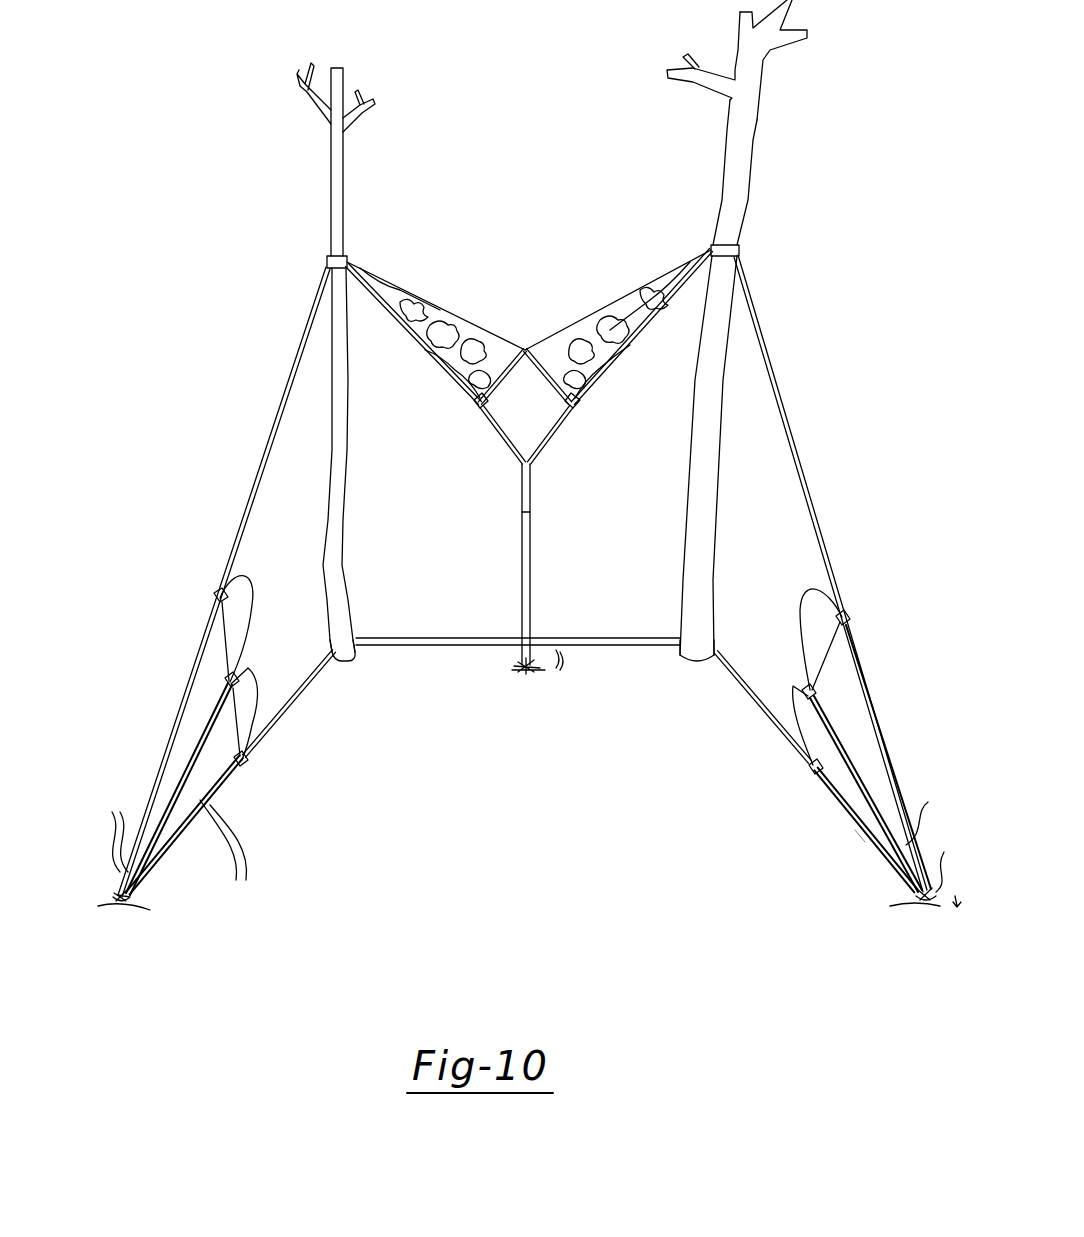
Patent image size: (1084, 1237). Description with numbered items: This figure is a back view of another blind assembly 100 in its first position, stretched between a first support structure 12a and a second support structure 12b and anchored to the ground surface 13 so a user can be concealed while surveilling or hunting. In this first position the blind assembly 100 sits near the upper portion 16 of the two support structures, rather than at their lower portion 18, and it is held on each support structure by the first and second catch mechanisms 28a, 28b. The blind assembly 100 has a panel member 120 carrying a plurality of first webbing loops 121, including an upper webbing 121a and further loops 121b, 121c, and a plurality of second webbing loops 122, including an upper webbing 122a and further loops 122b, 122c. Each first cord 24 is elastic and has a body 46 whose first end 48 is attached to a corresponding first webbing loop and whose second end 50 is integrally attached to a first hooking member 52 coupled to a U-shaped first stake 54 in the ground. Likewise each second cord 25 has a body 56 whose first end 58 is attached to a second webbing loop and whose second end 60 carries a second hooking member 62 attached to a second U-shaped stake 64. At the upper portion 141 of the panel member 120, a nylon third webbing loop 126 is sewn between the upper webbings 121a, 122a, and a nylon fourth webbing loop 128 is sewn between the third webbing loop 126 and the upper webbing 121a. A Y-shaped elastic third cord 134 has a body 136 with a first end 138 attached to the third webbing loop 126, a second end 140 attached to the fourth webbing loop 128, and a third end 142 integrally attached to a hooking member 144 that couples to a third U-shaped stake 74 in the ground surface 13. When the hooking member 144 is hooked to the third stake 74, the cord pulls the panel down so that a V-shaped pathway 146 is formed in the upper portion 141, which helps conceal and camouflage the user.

The first support structure 12a is at (716, 47).
The second support structure 12b is at (538, 353).
The ground surface 13 is at (693, 999).
The upper portion 16 is at (335, 160).
The lower portion 18 is at (345, 667).
The first cord 24 is at (849, 731).
The second cord 25 is at (208, 708).
The first catch mechanism 28a is at (740, 250).
The second catch mechanism 28b is at (328, 261).
The body 46 is at (870, 842).
The first end 48 is at (814, 692).
The second end 50 is at (930, 814).
The first hooking member 52 is at (946, 859).
The first stake 54 is at (908, 904).
The body 56 is at (227, 846).
The first end 58 is at (228, 680).
The second end 60 is at (106, 834).
The second hooking member 62 is at (116, 893).
The second stake 64 is at (134, 906).
The third stake 74 is at (522, 669).
The blind assembly 100 is at (262, 354).
The panel member 120 is at (788, 354).
The first webbing loops 121 is at (770, 740).
The upper webbing 121a is at (838, 619).
The first webbing loop 121b is at (802, 692).
The first webbing loop 121c is at (811, 769).
The second webbing loops 122 is at (270, 732).
The upper webbing 122a is at (250, 592).
The second webbing loop 122b is at (243, 677).
The second webbing loop 122c is at (243, 764).
The third webbing loop 126 is at (476, 403).
The fourth webbing loop 128 is at (577, 410).
The third cord 134 is at (526, 564).
The body 136 is at (532, 514).
The first end 138 is at (492, 430).
The second end 140 is at (556, 430).
The upper portion 141 is at (585, 308).
The third end 142 is at (531, 640).
The hooking member 144 is at (562, 665).
The V-shaped pathway 146 is at (452, 308).